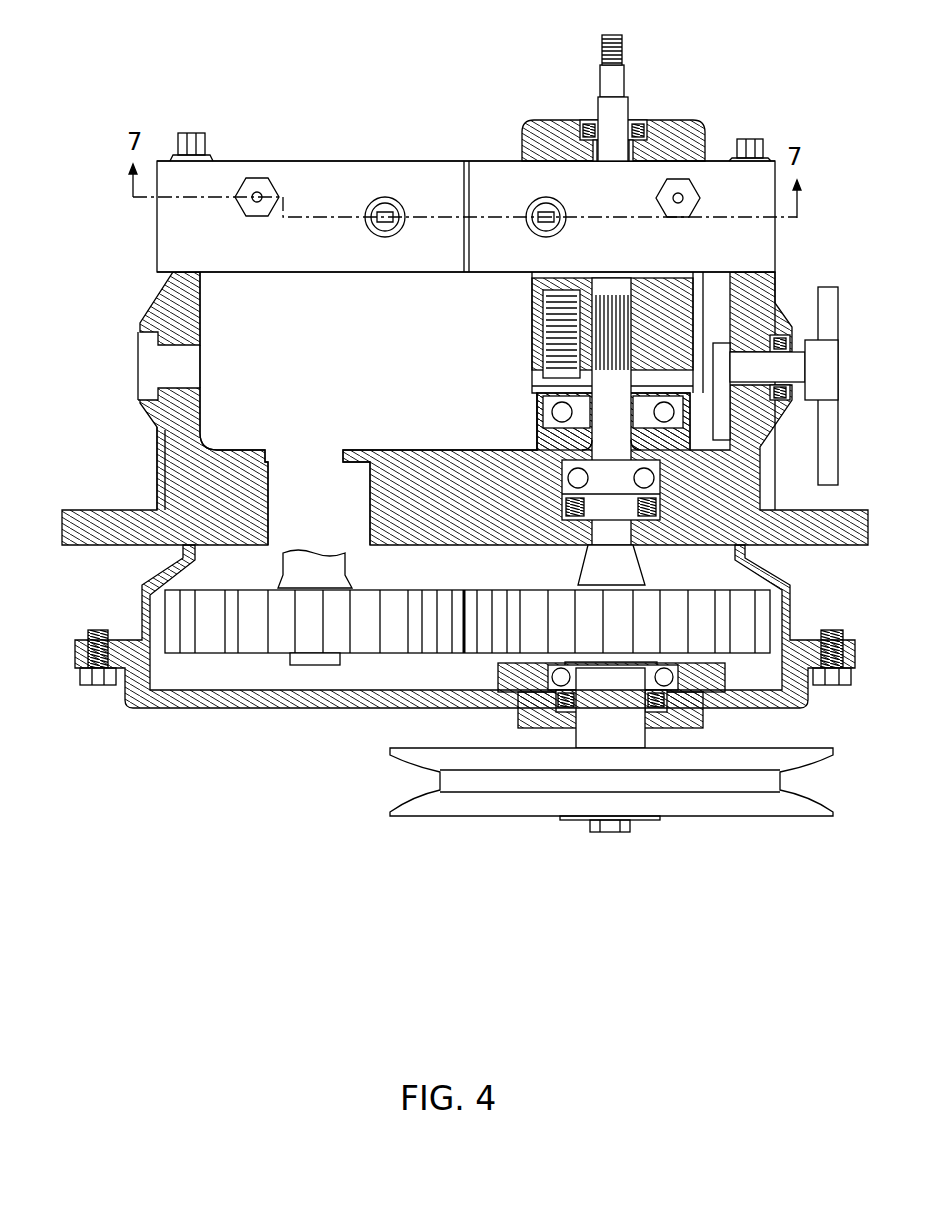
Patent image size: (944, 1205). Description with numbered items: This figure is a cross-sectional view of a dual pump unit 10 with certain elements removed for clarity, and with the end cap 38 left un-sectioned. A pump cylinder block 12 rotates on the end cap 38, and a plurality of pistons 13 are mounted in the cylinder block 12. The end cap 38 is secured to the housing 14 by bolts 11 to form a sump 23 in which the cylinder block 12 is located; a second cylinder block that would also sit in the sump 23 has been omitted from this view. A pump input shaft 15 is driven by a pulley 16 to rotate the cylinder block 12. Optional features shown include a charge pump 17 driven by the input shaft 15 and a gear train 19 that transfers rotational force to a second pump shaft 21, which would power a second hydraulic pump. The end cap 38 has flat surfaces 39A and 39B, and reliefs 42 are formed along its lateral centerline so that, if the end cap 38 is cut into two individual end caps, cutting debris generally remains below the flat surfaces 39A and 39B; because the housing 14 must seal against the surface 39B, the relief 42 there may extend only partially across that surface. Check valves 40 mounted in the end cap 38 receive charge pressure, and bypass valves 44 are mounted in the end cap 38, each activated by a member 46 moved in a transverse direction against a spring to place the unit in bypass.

The dual pump unit 10 is at (104, 82).
The bolts 11 is at (192, 133).
The pump cylinder block 12 is at (532, 318).
The pistons 13 is at (543, 373).
The housing 14 is at (157, 302).
The pump input shaft 15 is at (623, 713).
The pulley 16 is at (405, 816).
The charge pump 17 is at (524, 140).
The gear train 19 is at (480, 586).
The second pump shaft 21 is at (329, 571).
The sump 23 is at (373, 366).
The end cap 38 is at (157, 214).
The flat surface 39A is at (342, 161).
The flat surface 39B is at (341, 272).
The check valves 40 is at (390, 233).
The reliefs 42 is at (467, 183).
The bypass valves 44 is at (251, 214).
The member 46 is at (262, 195).